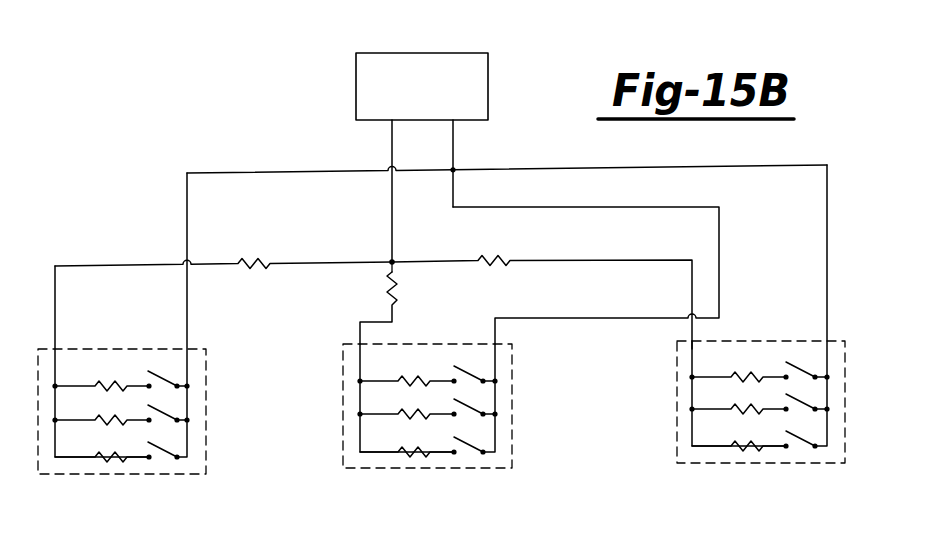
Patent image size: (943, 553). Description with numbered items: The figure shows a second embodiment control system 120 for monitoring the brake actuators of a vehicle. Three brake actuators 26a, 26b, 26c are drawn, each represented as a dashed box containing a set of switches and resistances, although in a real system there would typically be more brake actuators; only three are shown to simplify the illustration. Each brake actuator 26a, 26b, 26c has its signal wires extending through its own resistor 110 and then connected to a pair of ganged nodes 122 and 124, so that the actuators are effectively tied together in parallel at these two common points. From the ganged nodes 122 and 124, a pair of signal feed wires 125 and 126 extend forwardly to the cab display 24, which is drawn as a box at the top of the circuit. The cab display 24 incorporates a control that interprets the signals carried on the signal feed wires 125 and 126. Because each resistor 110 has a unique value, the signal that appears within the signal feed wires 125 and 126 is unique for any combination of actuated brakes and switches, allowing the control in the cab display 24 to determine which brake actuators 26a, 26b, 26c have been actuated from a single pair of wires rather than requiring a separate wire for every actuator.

The control system embodiment 120 is at (309, 78).
The cab display 24 is at (463, 53).
The signal feed wire 125 is at (392, 136).
The signal feed wire 126 is at (453, 140).
The ganged node 124 is at (452, 196).
The ganged node 122 is at (392, 262).
The resistor 110 is at (263, 259).
The brake actuator 26a is at (177, 474).
The brake actuator 26b is at (430, 468).
The brake actuator 26c is at (720, 463).